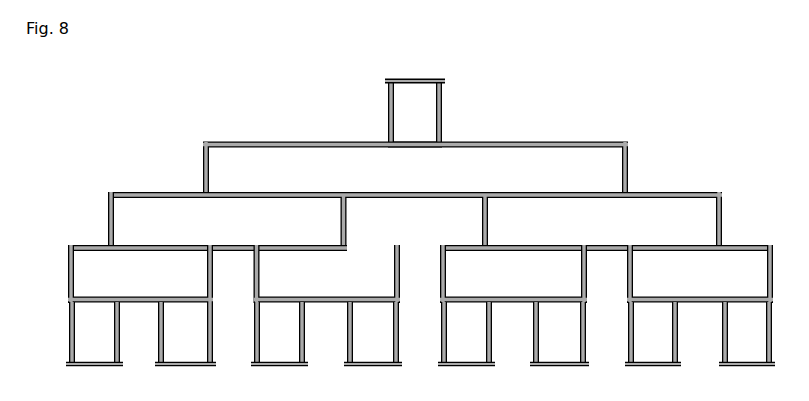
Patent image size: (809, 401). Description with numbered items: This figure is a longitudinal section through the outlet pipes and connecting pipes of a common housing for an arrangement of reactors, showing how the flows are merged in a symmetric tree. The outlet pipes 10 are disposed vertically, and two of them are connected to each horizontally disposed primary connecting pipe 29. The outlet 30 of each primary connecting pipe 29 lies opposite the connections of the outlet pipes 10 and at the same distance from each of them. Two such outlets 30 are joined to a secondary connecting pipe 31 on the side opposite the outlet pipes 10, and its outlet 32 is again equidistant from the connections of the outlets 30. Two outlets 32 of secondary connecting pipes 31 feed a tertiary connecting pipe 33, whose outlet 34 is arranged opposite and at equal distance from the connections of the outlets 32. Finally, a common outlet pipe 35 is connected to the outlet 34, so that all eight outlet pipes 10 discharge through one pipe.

The outlet pipe 10 is at (62, 336).
The primary connecting pipe 29 is at (59, 271).
The outlet of the primary connecting pipe 30 is at (135, 236).
The secondary connecting pipe 31 is at (99, 222).
The outlet of the secondary connecting pipe 32 is at (233, 183).
The tertiary connecting pipe 33 is at (197, 163).
The outlet of the tertiary connecting pipe 34 is at (429, 142).
The common outlet pipe 35 is at (445, 102).